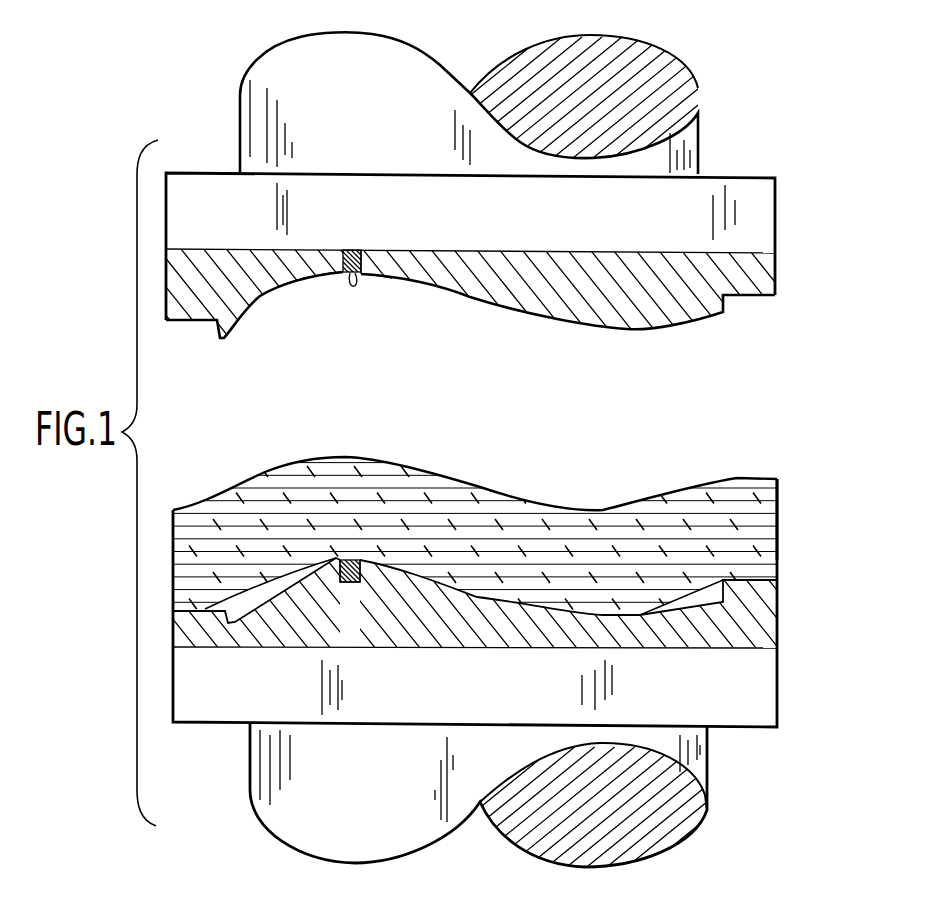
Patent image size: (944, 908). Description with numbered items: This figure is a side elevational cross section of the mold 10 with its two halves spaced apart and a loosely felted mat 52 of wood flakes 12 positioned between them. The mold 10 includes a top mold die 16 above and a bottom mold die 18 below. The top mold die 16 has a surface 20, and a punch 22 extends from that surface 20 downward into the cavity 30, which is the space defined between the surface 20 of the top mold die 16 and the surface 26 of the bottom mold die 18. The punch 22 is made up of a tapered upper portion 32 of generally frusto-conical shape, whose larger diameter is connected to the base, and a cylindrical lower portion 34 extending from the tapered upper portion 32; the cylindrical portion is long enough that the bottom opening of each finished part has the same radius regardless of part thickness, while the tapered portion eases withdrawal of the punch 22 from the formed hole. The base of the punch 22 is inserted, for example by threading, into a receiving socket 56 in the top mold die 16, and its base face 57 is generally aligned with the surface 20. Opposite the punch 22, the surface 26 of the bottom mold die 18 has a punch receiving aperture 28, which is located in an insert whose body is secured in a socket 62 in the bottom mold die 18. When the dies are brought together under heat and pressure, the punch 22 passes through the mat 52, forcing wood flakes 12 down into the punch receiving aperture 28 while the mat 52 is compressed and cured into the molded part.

The mold 10 is at (735, 102).
The top mold die 16 is at (790, 202).
The bottom mold die 18 is at (787, 710).
The surface 20 is at (633, 330).
The punch 22 is at (375, 278).
The surface 26 is at (473, 585).
The punch receiving aperture 28 is at (349, 560).
The cavity 30 is at (532, 394).
The tapered upper portion 32 is at (348, 278).
The cylindrical lower portion 34 is at (353, 280).
The wood flakes 12 is at (704, 497).
The loosely felted mat 52 is at (785, 495).
The receiving socket 56 is at (342, 262).
The base face 57 is at (363, 277).
The socket 62 is at (365, 583).